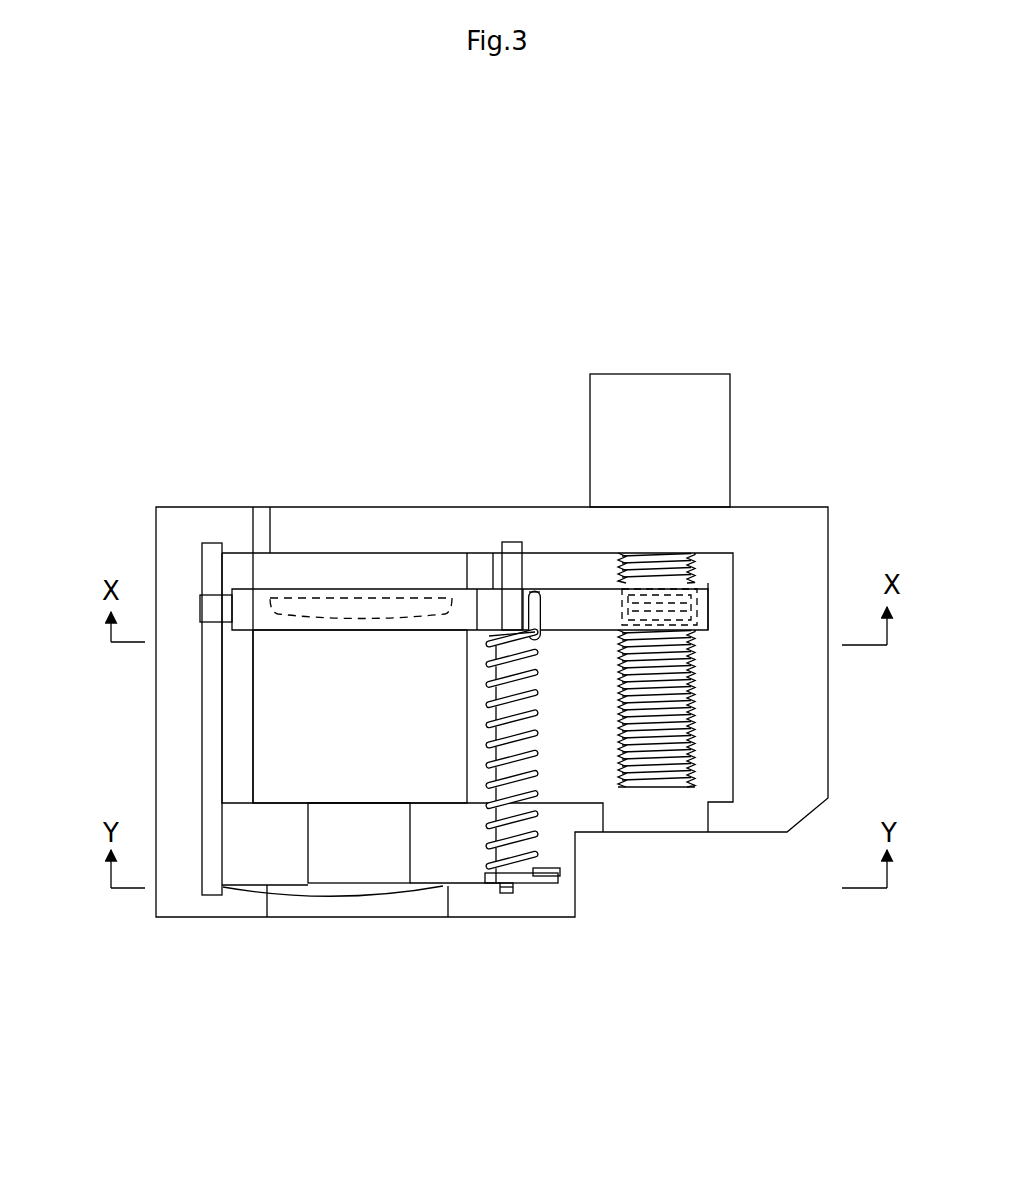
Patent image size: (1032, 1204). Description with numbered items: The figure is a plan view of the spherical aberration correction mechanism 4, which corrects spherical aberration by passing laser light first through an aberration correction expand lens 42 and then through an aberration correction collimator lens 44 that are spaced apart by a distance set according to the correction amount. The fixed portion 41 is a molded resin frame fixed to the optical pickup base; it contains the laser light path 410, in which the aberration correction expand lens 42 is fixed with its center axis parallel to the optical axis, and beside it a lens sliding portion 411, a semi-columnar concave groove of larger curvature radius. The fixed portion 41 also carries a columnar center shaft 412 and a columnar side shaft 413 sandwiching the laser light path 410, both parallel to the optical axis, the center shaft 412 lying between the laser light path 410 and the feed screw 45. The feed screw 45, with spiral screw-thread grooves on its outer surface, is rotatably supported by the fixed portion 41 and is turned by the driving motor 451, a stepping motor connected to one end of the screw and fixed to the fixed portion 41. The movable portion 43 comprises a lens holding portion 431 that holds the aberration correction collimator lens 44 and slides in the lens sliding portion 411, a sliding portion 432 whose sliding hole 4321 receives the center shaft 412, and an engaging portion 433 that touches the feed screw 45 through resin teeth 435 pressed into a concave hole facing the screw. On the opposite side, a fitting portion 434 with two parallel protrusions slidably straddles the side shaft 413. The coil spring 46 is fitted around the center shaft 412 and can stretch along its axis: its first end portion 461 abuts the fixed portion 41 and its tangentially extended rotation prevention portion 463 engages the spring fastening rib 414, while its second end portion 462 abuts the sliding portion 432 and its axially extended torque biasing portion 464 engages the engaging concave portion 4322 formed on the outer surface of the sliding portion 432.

The spherical aberration correction mechanism 4 is at (153, 472).
The fixed portion 41 is at (807, 517).
The laser light path 410 is at (357, 882).
The lens sliding portion 411 is at (260, 700).
The center shaft 412 is at (508, 887).
The side shaft 413 is at (207, 882).
The spring fastening rib 414 is at (557, 888).
The aberration correction expand lens 42 is at (402, 905).
The movable portion 43 is at (240, 588).
The lens holding portion 431 is at (262, 597).
The sliding portion 432 is at (477, 590).
The sliding hole 4321 is at (503, 623).
The engaging concave portion 4322 is at (520, 542).
The engaging portion 433 is at (708, 628).
The fitting portion 434 is at (213, 607).
The teeth 435 is at (707, 582).
The aberration correction collimator lens 44 is at (335, 598).
The feed screw 45 is at (677, 770).
The driving motor 451 is at (717, 378).
The coil spring 46 is at (483, 860).
The first end portion 461 is at (513, 878).
The second end portion 462 is at (523, 645).
The rotation prevention portion 463 is at (547, 880).
The torque biasing portion 464 is at (538, 590).